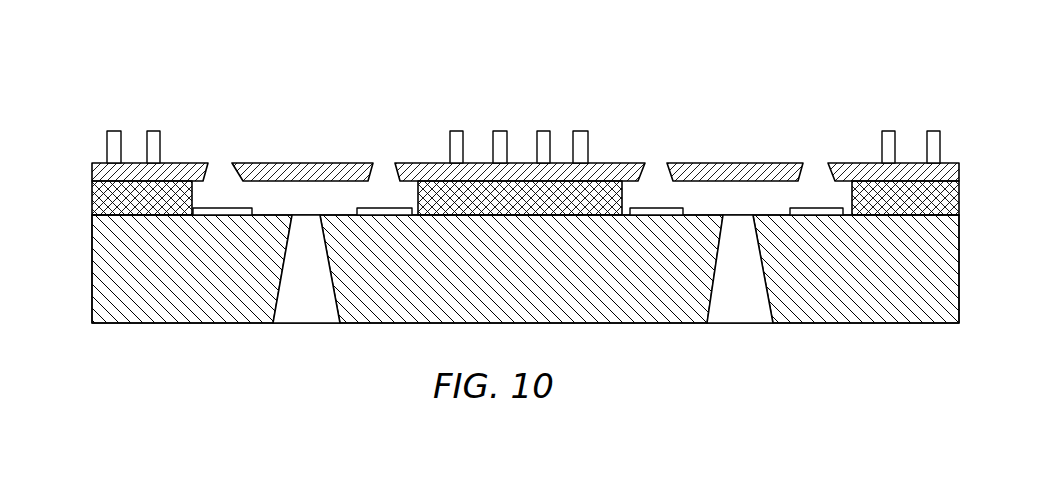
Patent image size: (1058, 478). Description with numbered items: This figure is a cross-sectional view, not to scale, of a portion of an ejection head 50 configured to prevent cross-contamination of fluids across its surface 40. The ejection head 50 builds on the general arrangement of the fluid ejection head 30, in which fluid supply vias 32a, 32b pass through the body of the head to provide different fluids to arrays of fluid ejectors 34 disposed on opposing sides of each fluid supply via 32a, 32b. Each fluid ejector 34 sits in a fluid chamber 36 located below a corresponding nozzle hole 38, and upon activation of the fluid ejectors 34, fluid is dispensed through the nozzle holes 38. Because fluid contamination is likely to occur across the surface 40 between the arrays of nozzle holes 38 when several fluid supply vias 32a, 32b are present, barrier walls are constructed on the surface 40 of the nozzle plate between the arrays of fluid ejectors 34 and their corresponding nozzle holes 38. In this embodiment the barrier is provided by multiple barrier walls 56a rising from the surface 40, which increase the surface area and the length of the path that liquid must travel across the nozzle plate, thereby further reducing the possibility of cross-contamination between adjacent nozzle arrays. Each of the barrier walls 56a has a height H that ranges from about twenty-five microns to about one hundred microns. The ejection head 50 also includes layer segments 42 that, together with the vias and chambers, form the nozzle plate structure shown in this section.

The fluid ejection head 30 is at (525, 269).
The fluid supply via 32a is at (302, 297).
The fluid supply via 32b is at (728, 305).
The fluid ejector 34 is at (215, 215).
The fluid chamber 36 is at (223, 205).
The nozzle hole 38 is at (222, 165).
The surface 40 is at (707, 163).
The layer segments 42 is at (368, 173).
The ejection head 50 is at (882, 115).
The barrier wall 56a is at (602, 116).
The height H is at (58, 92).